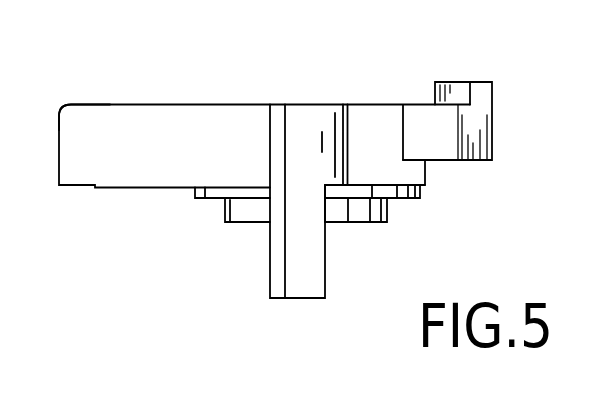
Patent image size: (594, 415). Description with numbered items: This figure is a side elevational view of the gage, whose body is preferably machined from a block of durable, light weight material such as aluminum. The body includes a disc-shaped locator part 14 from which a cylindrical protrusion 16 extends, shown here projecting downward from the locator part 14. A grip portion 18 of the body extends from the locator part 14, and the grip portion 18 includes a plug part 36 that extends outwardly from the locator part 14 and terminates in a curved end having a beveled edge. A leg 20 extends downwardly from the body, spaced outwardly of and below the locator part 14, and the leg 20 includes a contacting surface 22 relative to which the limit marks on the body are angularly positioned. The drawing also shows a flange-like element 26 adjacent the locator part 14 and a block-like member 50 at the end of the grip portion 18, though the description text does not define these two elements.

The locator part 14 is at (204, 199).
The cylindrical protrusion 16 is at (247, 212).
The grip portion 18 is at (230, 127).
The leg 20 is at (273, 302).
The contacting surface 22 is at (303, 285).
The flange 26 is at (400, 175).
The plug part 36 is at (100, 108).
The stop member 50 is at (467, 80).